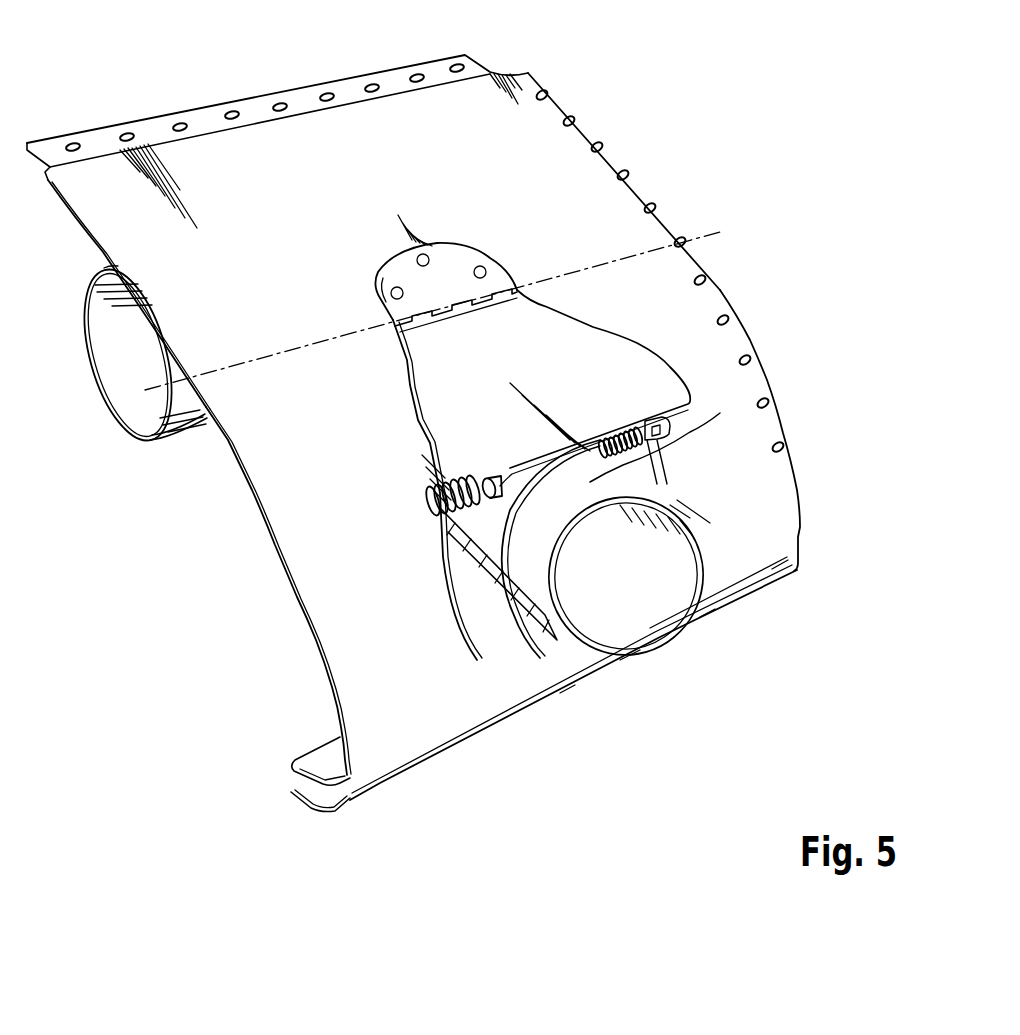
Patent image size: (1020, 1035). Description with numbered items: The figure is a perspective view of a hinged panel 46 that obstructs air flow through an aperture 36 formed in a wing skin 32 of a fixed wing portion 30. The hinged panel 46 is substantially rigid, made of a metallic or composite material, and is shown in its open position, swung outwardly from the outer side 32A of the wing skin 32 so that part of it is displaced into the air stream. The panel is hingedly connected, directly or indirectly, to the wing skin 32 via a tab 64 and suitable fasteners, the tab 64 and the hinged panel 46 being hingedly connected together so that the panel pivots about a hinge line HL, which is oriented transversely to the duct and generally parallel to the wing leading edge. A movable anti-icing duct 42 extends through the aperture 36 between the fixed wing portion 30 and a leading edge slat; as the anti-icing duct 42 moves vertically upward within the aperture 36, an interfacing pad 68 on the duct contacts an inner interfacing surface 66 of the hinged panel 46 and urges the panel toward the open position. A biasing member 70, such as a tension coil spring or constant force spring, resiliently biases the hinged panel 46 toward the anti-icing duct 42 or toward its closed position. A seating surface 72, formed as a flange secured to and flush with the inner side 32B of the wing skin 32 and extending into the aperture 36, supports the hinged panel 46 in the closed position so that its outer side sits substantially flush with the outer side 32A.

The fixed wing portion 30 is at (549, 75).
The wing skin 32 is at (413, 414).
The outer side of wing skin 32A is at (385, 193).
The inner side of wing skin 32B is at (231, 538).
The hinge line HL is at (592, 265).
The tab 64 is at (457, 263).
The hinged panel 46 is at (524, 363).
The aperture 36 is at (423, 443).
The anti-icing duct 42 is at (535, 558).
The inner interfacing surface 66 is at (587, 447).
The biasing member 70 is at (627, 437).
The interfacing pad 68 is at (700, 415).
The seating surface 72 is at (670, 470).